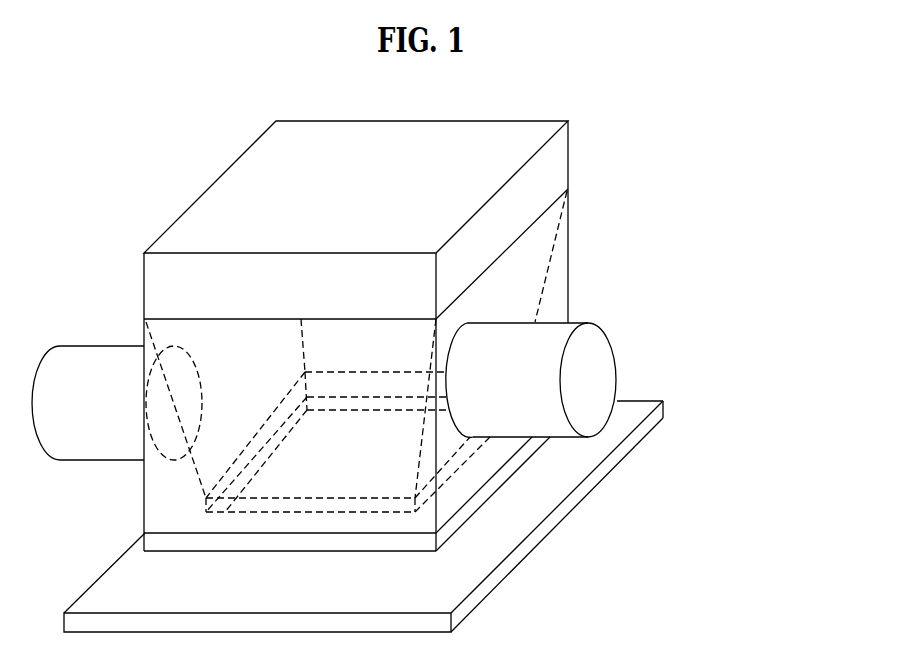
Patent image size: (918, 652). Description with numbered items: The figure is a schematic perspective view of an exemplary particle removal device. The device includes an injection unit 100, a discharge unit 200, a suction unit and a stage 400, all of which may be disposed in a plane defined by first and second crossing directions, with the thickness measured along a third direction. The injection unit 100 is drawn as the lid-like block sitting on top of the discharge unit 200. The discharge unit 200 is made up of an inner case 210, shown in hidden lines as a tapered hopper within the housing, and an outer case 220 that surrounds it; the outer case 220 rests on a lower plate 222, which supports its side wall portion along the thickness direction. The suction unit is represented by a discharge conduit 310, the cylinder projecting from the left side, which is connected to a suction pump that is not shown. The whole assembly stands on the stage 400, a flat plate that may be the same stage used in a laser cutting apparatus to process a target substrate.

The injection unit 100 is at (568, 150).
The discharge unit 200 is at (479, 370).
The inner case 210 is at (742, 473).
The outer case 220 is at (568, 267).
The lower plate 222 is at (515, 460).
The discharge conduit 310 is at (98, 363).
The stage 400 is at (553, 520).